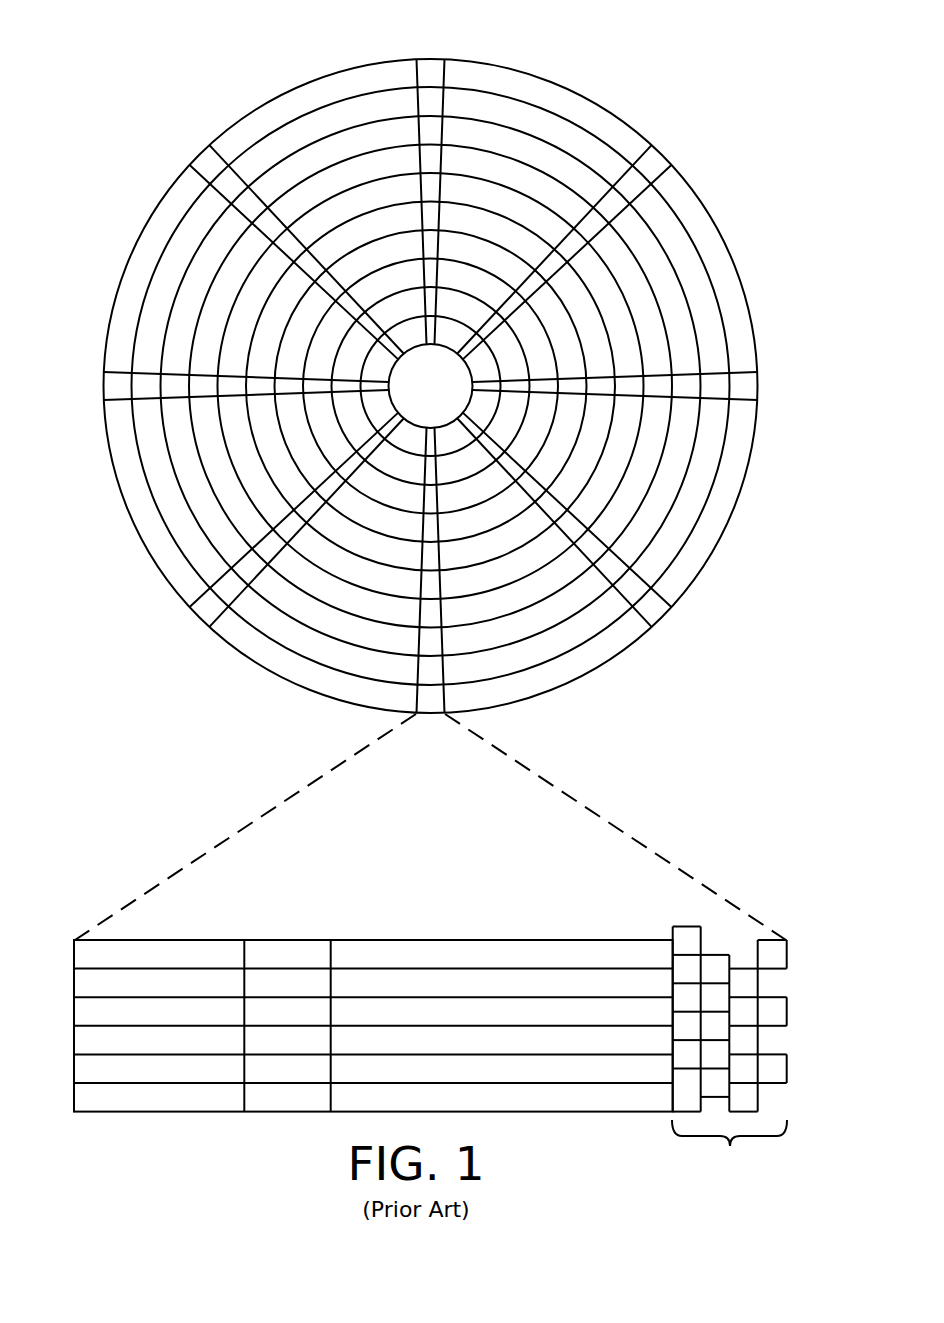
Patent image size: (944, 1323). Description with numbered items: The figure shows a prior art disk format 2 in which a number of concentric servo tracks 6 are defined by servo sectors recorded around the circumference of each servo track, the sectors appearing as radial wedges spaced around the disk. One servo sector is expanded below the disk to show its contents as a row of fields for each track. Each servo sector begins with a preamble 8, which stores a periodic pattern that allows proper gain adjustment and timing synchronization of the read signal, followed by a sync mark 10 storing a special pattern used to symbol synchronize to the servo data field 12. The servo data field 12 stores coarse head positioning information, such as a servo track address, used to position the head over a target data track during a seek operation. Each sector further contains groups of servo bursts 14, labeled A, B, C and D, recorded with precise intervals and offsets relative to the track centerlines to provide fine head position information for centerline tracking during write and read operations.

The disk format 2 is at (186, 60).
The servo track 6 is at (541, 125).
The preamble 8 is at (172, 940).
The sync mark 10 is at (287, 940).
The servo data field 12 is at (488, 940).
The servo bursts 14 is at (656, 906).